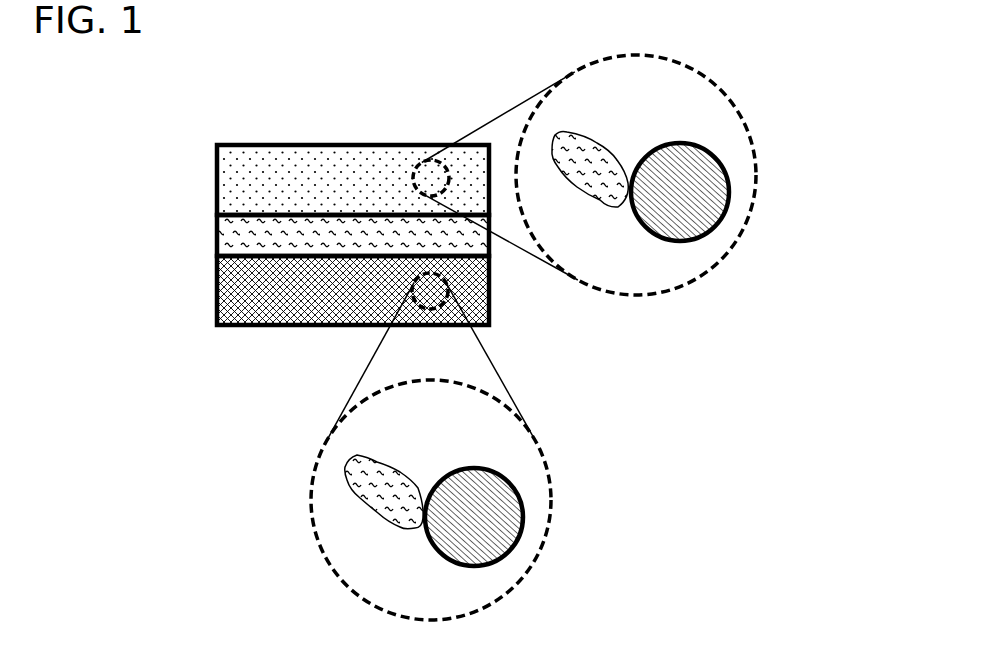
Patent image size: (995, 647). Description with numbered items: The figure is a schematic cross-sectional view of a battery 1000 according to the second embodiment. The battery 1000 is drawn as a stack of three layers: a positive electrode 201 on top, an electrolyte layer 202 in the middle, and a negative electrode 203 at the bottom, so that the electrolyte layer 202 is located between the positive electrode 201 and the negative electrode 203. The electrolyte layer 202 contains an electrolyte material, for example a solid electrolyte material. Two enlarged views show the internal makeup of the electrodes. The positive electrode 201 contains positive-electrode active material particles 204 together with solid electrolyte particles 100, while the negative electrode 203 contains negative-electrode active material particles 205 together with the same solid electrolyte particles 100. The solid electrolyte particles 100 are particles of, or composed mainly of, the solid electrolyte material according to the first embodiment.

The battery 1000 is at (293, 199).
The positive electrode 201 is at (252, 167).
The electrolyte layer 202 is at (252, 232).
The negative electrode 203 is at (252, 290).
The positive-electrode active material particles 204 is at (695, 193).
The negative-electrode active material particles 205 is at (490, 513).
The solid electrolyte particles 100 is at (607, 182).